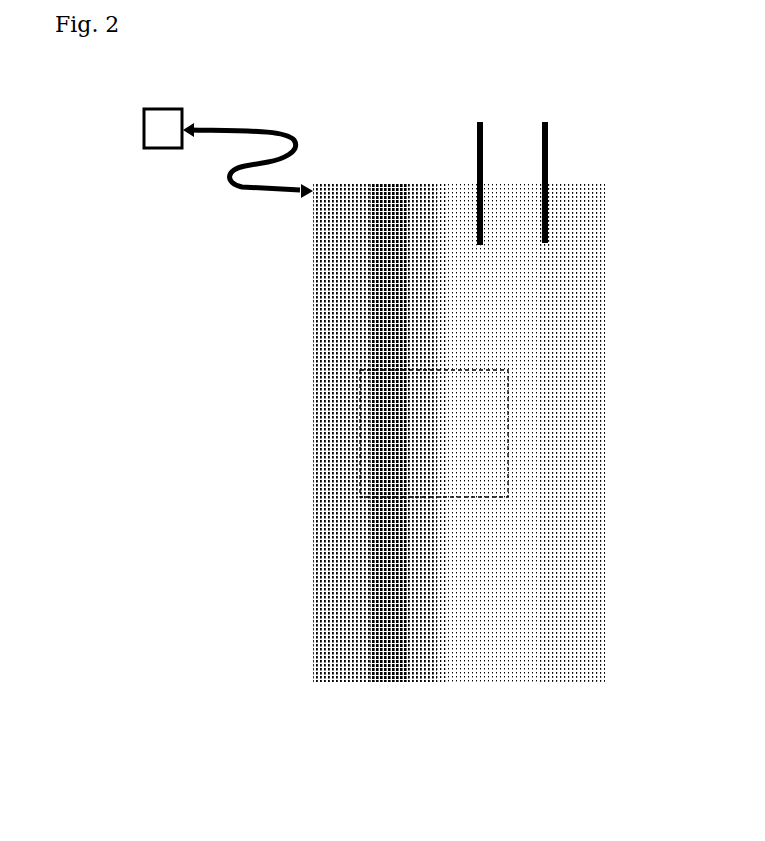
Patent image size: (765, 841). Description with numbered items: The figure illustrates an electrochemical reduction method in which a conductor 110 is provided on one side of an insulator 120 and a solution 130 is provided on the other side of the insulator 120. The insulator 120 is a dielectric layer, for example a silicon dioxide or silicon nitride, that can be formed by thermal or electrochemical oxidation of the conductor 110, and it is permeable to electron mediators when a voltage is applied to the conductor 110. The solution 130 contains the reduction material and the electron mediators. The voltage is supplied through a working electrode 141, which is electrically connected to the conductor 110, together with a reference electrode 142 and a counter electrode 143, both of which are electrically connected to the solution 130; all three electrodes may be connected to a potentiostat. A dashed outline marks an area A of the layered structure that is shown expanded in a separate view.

The conductor 110 is at (367, 660).
The insulator 120 is at (418, 665).
The solution 130 is at (530, 657).
The working electrode 141 is at (157, 132).
The reference electrode 142 is at (476, 150).
The counter electrode 143 is at (549, 143).
The area A is at (360, 438).